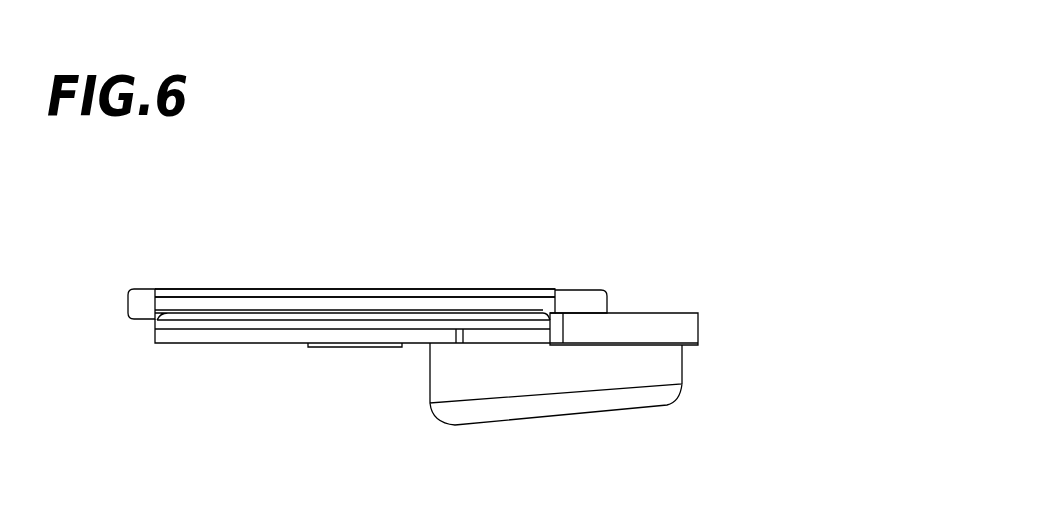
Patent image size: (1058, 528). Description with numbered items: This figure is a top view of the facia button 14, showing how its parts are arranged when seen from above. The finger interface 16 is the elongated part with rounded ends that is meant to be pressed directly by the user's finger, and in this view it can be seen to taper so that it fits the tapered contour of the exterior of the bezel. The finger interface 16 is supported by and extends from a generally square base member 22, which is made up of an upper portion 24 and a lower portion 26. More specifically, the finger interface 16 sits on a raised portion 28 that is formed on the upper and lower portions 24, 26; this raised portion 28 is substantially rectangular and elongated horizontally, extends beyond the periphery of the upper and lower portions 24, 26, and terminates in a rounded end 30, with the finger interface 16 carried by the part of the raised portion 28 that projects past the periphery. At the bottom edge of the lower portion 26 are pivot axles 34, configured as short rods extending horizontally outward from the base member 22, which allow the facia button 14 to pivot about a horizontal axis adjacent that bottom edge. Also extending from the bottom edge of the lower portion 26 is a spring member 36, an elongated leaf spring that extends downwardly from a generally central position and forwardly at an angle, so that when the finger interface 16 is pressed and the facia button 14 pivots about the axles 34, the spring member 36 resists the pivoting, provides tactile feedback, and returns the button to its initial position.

The facia button 14 is at (860, 288).
The finger interface 16 is at (587, 403).
The base member 22 is at (752, 308).
The upper portion 24 is at (192, 322).
The lower portion 26 is at (462, 294).
The raised portion 28 is at (255, 337).
The rounded end 30 is at (698, 333).
The pivot axles 34 is at (145, 300).
The spring member 36 is at (360, 347).